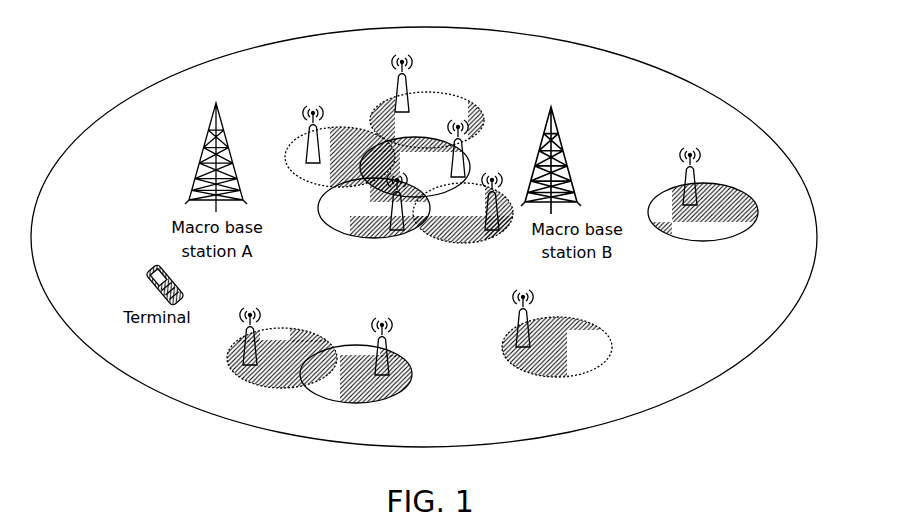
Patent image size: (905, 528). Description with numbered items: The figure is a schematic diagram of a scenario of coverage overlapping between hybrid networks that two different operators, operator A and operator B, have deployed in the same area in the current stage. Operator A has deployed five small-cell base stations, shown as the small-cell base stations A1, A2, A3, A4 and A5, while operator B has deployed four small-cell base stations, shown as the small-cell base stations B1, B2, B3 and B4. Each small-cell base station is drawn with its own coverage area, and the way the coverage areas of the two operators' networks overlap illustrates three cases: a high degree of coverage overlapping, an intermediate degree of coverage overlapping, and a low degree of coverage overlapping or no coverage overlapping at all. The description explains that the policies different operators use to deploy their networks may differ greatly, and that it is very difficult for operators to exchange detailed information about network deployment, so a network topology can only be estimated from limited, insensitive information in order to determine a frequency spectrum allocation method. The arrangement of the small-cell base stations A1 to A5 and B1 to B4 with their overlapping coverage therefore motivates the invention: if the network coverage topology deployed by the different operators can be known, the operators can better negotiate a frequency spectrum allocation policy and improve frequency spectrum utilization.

The small-cell base station A1 is at (340, 147).
The small-cell base station A2 is at (427, 102).
The small-cell base station A3 is at (282, 349).
The small-cell base station A4 is at (557, 335).
The small-cell base station A5 is at (463, 216).
The small-cell base station B1 is at (415, 162).
The small-cell base station B2 is at (375, 214).
The small-cell base station B3 is at (357, 361).
The small-cell base station B4 is at (703, 194).